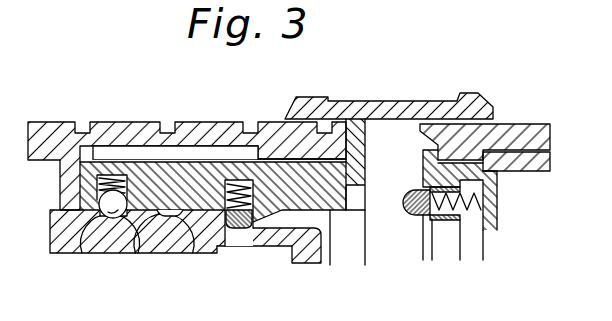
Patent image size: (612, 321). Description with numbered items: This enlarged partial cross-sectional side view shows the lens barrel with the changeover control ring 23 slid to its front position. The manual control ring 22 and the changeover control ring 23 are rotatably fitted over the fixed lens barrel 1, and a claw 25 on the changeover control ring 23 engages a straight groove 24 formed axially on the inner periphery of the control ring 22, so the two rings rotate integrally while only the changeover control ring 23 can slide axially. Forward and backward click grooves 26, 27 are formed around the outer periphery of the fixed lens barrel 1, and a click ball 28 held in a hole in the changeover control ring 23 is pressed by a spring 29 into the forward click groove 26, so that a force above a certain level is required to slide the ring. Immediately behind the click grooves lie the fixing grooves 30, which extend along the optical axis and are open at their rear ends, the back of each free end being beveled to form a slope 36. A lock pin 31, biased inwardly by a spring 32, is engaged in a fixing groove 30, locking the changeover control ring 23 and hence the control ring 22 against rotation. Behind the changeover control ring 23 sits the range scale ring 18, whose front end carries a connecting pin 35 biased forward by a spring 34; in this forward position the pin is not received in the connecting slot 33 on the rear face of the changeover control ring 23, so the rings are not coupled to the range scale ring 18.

The fixed lens barrel 1 is at (58, 236).
The range scale ring 18 is at (535, 173).
The manual control ring 22 is at (45, 128).
The changeover control ring 23 is at (387, 118).
The straight groove 24 is at (224, 150).
The claw 25 is at (145, 156).
The forward click groove 26 is at (134, 253).
The backward click groove 27 is at (189, 248).
The click ball 28 is at (91, 253).
The spring 29 is at (114, 177).
The fixing groove 30 is at (252, 229).
The lock pin 31 is at (238, 228).
The spring 32 is at (242, 186).
The connecting slot 33 is at (352, 220).
The spring 34 is at (468, 218).
The connecting pin 35 is at (410, 216).
The slope 36 is at (289, 207).